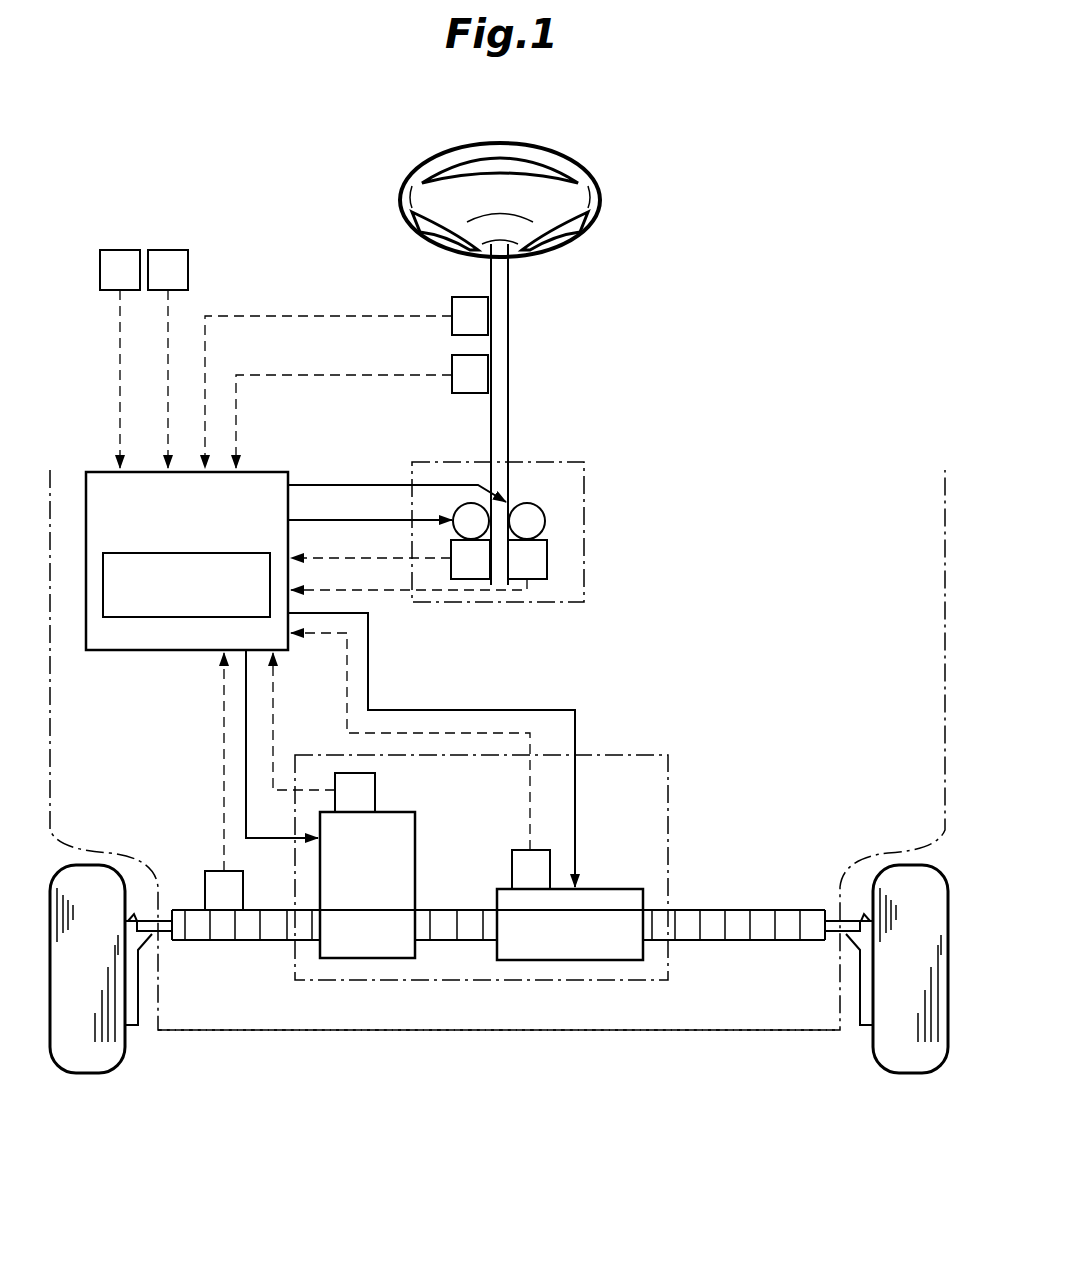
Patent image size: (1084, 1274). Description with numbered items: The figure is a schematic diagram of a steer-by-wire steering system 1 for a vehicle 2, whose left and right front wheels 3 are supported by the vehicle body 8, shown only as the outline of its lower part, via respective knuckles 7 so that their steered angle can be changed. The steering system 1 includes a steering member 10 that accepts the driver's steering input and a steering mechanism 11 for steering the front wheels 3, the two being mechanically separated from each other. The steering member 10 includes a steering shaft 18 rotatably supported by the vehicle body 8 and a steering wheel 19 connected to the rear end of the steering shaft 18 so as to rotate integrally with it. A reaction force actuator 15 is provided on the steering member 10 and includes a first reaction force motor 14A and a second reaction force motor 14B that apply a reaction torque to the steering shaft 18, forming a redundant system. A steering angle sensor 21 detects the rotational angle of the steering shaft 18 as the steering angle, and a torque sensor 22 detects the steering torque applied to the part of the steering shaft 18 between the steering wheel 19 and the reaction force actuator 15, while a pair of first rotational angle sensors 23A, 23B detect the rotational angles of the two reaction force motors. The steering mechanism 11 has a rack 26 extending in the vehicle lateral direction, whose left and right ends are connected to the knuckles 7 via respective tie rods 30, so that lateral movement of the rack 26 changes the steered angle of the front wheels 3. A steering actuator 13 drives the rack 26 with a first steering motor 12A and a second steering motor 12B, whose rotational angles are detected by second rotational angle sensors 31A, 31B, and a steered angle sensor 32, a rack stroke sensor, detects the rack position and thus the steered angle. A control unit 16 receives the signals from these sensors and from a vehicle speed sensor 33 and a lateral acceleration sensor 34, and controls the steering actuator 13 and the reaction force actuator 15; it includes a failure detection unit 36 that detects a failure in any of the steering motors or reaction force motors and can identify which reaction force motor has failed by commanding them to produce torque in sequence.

The steering system 1 is at (378, 154).
The vehicle 2 is at (192, 72).
The front wheels 3 is at (82, 1073).
The knuckles 7 is at (135, 1027).
The vehicle body 8 is at (722, 1032).
The steering member 10 is at (602, 130).
The steering mechanism 11 is at (286, 958).
The first steering motor 12A is at (383, 960).
The second steering motor 12B is at (590, 960).
The steering actuator 13 is at (620, 755).
The first reaction force motor 14A is at (455, 530).
The second reaction force motor 14B is at (545, 523).
The reaction force actuator 15 is at (584, 497).
The control unit 16 is at (168, 652).
The steering shaft 18 is at (500, 343).
The steering wheel 19 is at (578, 238).
The steering angle sensor 21 is at (452, 300).
The torque sensor 22 is at (452, 358).
The first rotational angle sensor 23A is at (470, 579).
The first rotational angle sensor 23B is at (530, 582).
The rack 26 is at (715, 925).
The tie rods 30 is at (165, 932).
The second rotational angle sensor 31A is at (375, 790).
The second rotational angle sensor 31B is at (512, 866).
The steered angle sensor 32 is at (205, 888).
The vehicle speed sensor 33 is at (170, 250).
The lateral acceleration sensor 34 is at (123, 250).
The failure detection unit 36 is at (175, 553).